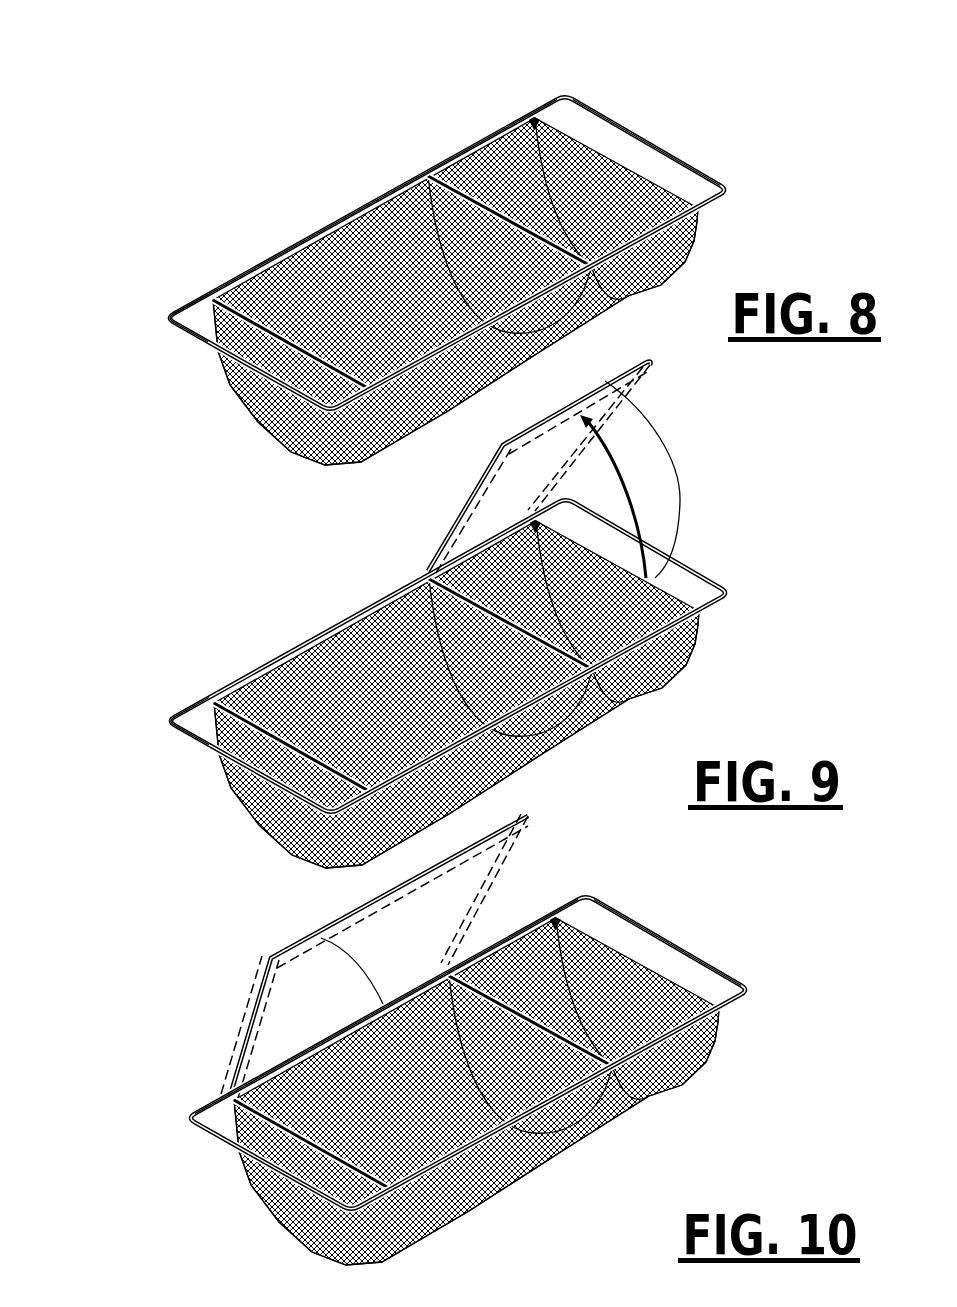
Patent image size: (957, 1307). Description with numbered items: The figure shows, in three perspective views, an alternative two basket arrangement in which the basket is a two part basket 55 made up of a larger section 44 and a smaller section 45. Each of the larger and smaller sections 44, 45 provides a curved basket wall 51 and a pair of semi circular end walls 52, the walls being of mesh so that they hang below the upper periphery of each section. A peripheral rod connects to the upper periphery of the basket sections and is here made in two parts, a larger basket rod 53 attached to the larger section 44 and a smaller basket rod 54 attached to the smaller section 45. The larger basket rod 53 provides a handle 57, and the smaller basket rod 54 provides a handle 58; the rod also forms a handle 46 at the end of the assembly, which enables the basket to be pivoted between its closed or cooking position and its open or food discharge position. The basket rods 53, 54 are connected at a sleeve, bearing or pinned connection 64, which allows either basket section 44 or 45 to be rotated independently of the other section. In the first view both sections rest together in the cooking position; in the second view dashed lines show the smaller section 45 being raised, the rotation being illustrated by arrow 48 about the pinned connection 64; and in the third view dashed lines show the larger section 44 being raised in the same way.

In FIG. 8, the larger section 44 is at (257, 253).
In FIG. 10, the larger section 44 is at (372, 1087).
In FIG. 8, the smaller section 45 is at (490, 128).
In FIG. 10, the smaller section 45 is at (657, 991).
In FIG. 9, the handle 46 is at (157, 740).
In FIG. 9, the arrow 48 is at (670, 496).
In FIG. 8, the curved basket wall 51 is at (620, 297).
In FIG. 10, the curved basket wall 51 is at (542, 1119).
In FIG. 8, the semi circular end walls 52 is at (655, 171).
In FIG. 9, the semi circular end walls 52 is at (456, 762).
In FIG. 10, the semi circular end walls 52 is at (474, 1157).
In FIG. 8, the larger basket rod 53 is at (333, 210).
In FIG. 9, the larger basket rod 53 is at (364, 711).
In FIG. 10, the larger basket rod 53 is at (382, 970).
In FIG. 8, the smaller basket rod 54 is at (727, 184).
In FIG. 9, the smaller basket rod 54 is at (476, 656).
In FIG. 10, the smaller basket rod 54 is at (491, 1053).
In FIG. 8, the two part basket 55 is at (442, 57).
In FIG. 9, the two part basket 55 is at (432, 691).
In FIG. 10, the two part basket 55 is at (392, 1091).
In FIG. 8, the handle 57 is at (183, 333).
In FIG. 8, the handle 58 is at (610, 111).
In FIG. 10, the handle 58 is at (667, 931).
In FIG. 9, the pinned connection 64 is at (524, 469).